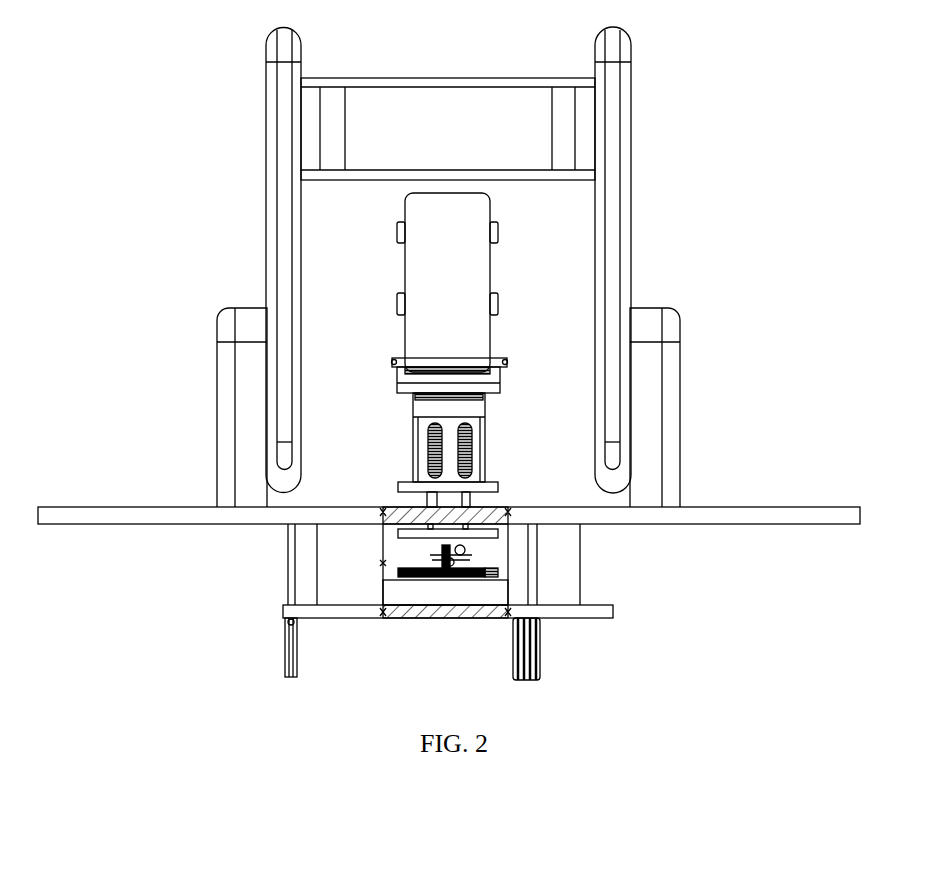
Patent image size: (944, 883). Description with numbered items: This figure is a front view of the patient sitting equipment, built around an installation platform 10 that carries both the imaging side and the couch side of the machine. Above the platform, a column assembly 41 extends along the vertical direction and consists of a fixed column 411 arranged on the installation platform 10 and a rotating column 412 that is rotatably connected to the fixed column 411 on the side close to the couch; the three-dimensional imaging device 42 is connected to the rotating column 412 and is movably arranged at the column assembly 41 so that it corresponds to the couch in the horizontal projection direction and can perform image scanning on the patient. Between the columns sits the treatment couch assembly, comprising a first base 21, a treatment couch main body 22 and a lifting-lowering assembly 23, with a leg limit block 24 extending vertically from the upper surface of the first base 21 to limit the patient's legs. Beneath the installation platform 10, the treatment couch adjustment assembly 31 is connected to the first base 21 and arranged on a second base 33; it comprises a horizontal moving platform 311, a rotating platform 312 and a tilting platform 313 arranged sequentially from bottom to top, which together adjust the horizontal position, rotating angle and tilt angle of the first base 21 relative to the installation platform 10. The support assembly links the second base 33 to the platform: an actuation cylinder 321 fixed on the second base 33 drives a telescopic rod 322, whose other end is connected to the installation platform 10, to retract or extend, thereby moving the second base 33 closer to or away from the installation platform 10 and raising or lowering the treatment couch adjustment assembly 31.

The installation platform 10 is at (720, 512).
The first base 21 is at (485, 486).
The treatment couch main body 22 is at (470, 290).
The lifting-lowering assembly 23 is at (483, 435).
The leg limit block 24 is at (422, 432).
The treatment couch adjustment assembly 31 is at (536, 592).
The horizontal moving platform 311 is at (505, 595).
The rotating platform 312 is at (480, 560).
The tilting platform 313 is at (488, 537).
The actuation cylinder 321 is at (540, 648).
The telescopic rod 322 is at (290, 535).
The second base 33 is at (335, 613).
The column assembly 41 is at (272, 222).
The fixed column 411 is at (650, 356).
The rotating column 412 is at (612, 150).
The 3D imaging device 42 is at (447, 104).